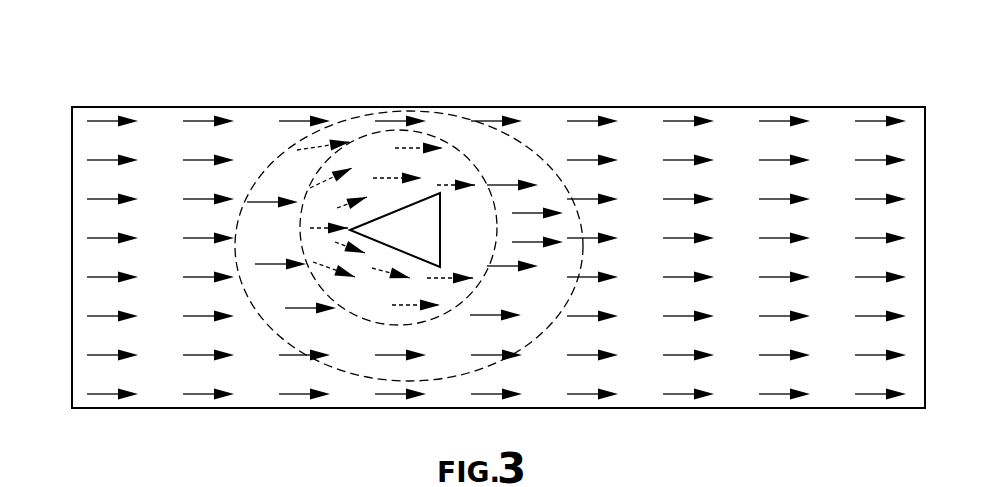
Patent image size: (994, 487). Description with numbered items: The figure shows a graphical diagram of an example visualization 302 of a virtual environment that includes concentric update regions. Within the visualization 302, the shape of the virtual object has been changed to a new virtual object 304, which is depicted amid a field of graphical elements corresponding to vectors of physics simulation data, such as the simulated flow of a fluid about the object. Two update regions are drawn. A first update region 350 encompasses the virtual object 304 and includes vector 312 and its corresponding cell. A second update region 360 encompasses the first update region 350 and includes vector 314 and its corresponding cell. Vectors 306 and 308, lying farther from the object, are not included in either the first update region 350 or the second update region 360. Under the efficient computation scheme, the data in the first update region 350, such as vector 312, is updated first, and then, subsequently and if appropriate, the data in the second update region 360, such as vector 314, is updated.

The visualization 302 is at (120, 66).
The virtual object 304 is at (440, 193).
The vector 306 is at (100, 238).
The vector 308 is at (97, 277).
The vector 312 is at (353, 197).
The vector 314 is at (270, 202).
The first update region 350 is at (468, 130).
The second update region 360 is at (545, 158).